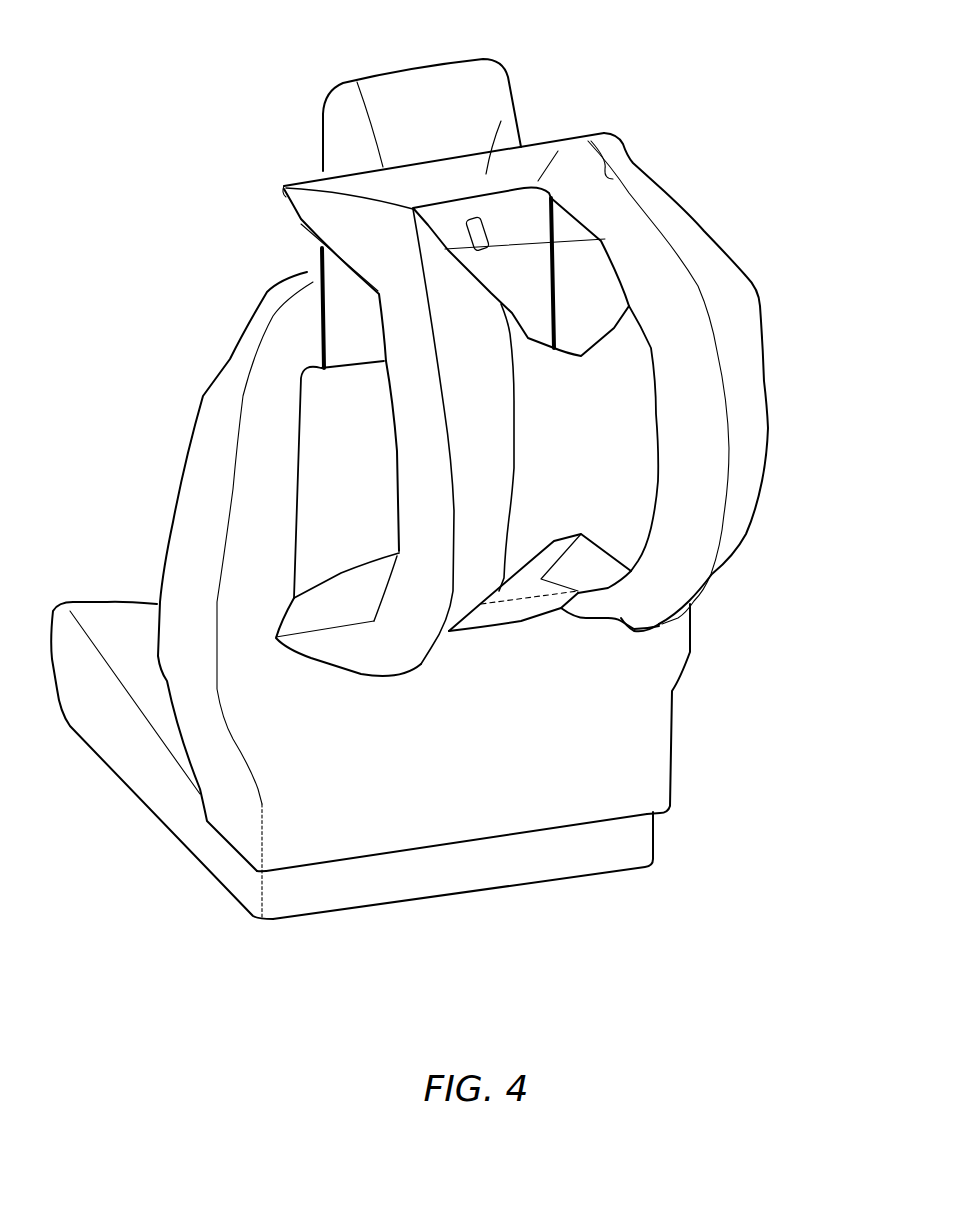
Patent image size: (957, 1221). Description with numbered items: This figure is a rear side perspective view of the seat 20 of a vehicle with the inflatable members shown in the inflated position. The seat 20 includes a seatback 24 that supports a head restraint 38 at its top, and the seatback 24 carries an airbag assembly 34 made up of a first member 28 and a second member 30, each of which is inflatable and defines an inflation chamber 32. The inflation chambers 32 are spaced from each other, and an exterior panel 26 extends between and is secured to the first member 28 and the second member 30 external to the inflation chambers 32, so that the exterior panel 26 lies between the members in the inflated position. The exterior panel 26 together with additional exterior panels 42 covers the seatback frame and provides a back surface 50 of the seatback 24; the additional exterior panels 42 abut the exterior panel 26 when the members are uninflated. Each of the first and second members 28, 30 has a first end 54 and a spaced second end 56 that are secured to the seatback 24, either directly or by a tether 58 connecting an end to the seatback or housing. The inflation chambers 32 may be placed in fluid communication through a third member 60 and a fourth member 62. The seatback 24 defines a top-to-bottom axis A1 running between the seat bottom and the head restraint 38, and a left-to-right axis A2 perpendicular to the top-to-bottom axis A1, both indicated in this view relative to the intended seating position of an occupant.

The seat 20 is at (136, 221).
The seatback 24 is at (190, 530).
The exterior panel 26 is at (630, 507).
The first member 28 is at (420, 457).
The second member 30 is at (740, 320).
The inflation chamber 32 is at (713, 270).
The airbag assembly 34 is at (702, 175).
The head restraint 38 is at (440, 77).
The additional exterior panel 42 is at (267, 450).
The back surface 50 is at (275, 551).
The first end 54 is at (353, 653).
The second end 56 is at (300, 227).
The tether 58 is at (317, 320).
The third member 60 is at (520, 607).
The fourth member 62 is at (500, 120).
The top-to-bottom axis A1 is at (845, 160).
The left-to-right axis A2 is at (341, 956).